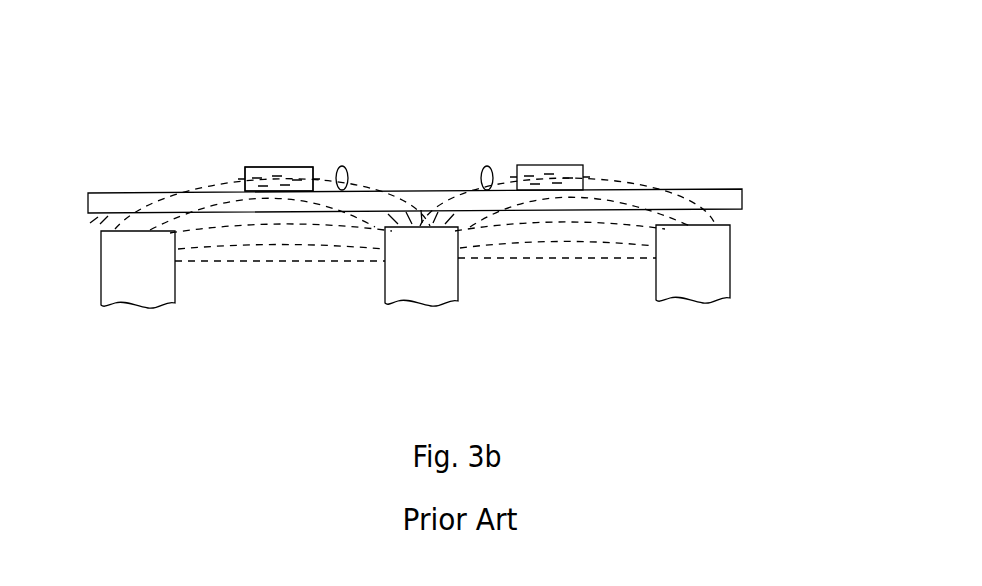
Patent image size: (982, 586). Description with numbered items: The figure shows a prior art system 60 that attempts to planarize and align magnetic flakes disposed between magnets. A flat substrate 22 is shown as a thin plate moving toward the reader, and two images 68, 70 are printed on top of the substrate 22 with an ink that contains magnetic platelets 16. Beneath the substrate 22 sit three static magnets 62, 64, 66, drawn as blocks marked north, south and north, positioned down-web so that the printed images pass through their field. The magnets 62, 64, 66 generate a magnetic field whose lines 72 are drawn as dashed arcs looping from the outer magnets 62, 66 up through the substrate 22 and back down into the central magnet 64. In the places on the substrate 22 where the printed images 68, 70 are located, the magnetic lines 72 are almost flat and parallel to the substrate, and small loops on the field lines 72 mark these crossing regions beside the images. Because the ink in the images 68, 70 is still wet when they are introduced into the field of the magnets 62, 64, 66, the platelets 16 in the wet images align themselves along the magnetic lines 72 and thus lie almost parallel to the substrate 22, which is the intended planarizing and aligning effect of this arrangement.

The magnetic platelets 16 is at (259, 178).
The flat substrate 22 is at (743, 191).
The prior art system 60 is at (749, 128).
The magnet 62 is at (175, 278).
The magnet 64 is at (458, 275).
The magnet 66 is at (730, 270).
The image 68 is at (292, 155).
The image 70 is at (565, 151).
The magnetic field lines 72 is at (487, 166).